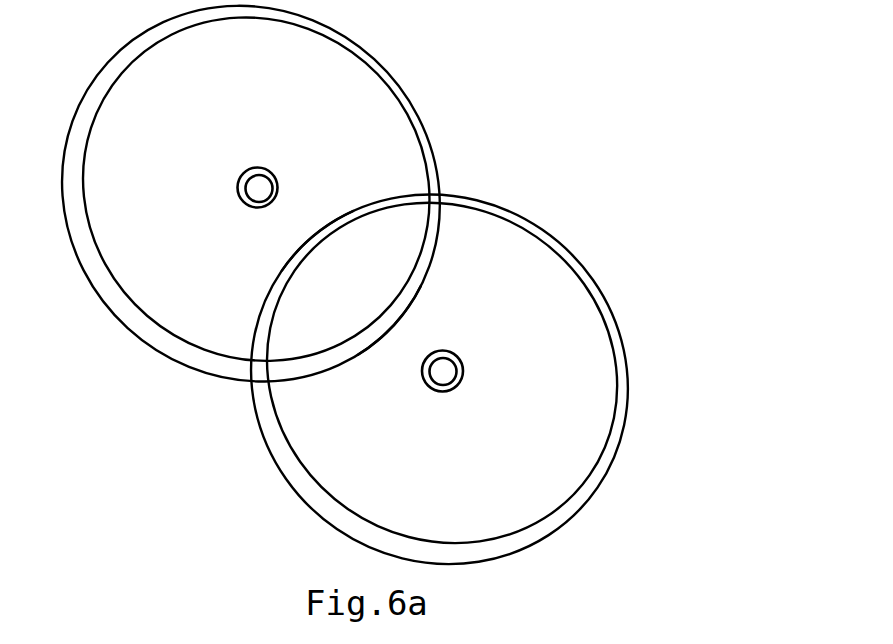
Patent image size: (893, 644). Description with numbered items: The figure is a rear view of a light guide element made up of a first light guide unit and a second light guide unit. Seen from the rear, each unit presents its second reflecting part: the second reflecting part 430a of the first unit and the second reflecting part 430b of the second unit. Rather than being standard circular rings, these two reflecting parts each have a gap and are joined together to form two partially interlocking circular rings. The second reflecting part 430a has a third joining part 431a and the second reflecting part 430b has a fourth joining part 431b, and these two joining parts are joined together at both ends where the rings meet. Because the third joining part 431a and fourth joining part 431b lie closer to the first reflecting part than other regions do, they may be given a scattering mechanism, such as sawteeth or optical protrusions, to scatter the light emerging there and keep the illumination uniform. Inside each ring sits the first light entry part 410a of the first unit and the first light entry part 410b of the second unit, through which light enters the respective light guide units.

The second reflecting part of the first light guide unit 430a is at (417, 113).
The second reflecting part of the second light guide unit 430b is at (617, 331).
The third joining part 431a is at (301, 249).
The fourth joining part 431b is at (415, 301).
The first light entry part of the first light guide unit 410a is at (238, 192).
The first light entry part of the second light guide unit 410b is at (425, 385).